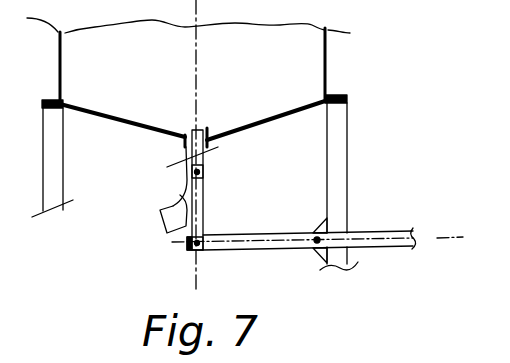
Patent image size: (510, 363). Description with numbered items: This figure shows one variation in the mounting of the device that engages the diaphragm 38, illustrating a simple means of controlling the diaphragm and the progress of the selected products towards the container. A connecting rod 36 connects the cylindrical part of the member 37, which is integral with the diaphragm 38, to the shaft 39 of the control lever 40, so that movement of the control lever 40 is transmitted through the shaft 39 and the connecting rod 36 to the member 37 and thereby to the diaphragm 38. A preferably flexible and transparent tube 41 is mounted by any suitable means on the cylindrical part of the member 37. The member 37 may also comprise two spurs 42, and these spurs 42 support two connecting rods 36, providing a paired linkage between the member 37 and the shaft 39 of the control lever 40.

The connecting rod 36 is at (204, 214).
The member 37 is at (165, 137).
The diaphragm 38 is at (268, 117).
The shaft 39 is at (194, 251).
The control lever 40 is at (267, 248).
The tube 41 is at (170, 207).
The spurs 42 is at (205, 172).